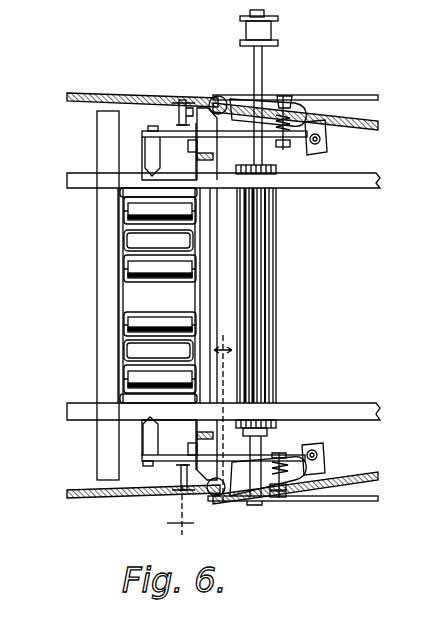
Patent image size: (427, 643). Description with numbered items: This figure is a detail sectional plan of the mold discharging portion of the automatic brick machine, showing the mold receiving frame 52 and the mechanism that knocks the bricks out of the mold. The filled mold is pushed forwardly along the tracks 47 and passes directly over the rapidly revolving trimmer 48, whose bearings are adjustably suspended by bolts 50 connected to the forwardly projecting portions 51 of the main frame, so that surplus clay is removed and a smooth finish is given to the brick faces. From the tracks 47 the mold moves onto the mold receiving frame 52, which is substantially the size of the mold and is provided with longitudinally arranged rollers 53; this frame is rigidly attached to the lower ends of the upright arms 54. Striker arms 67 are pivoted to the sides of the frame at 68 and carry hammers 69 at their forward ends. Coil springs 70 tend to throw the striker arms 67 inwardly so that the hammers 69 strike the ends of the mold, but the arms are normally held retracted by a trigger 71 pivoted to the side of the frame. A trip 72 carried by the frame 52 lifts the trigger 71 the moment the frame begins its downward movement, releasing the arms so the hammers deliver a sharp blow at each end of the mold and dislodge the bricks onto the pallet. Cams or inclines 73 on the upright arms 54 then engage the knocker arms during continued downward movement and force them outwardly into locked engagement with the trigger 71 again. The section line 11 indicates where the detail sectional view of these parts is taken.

The section line 11— 11 is at (200, 435).
The tracks 47 is at (328, 180).
The trimmer 48 is at (262, 250).
The bolts 50 is at (222, 97).
The forwardly projecting portions of the main frame 51 is at (129, 99).
The mold receiving frame 52 is at (113, 213).
The rollers 53 is at (165, 266).
The upright arms 54 is at (214, 167).
The striker arms 67 is at (263, 139).
The pivot 68 is at (328, 140).
The hammers 69 is at (147, 144).
The coil springs 70 is at (283, 109).
The trigger 71 is at (182, 126).
The trip 72 is at (180, 494).
The cams or inclines 73 is at (198, 151).